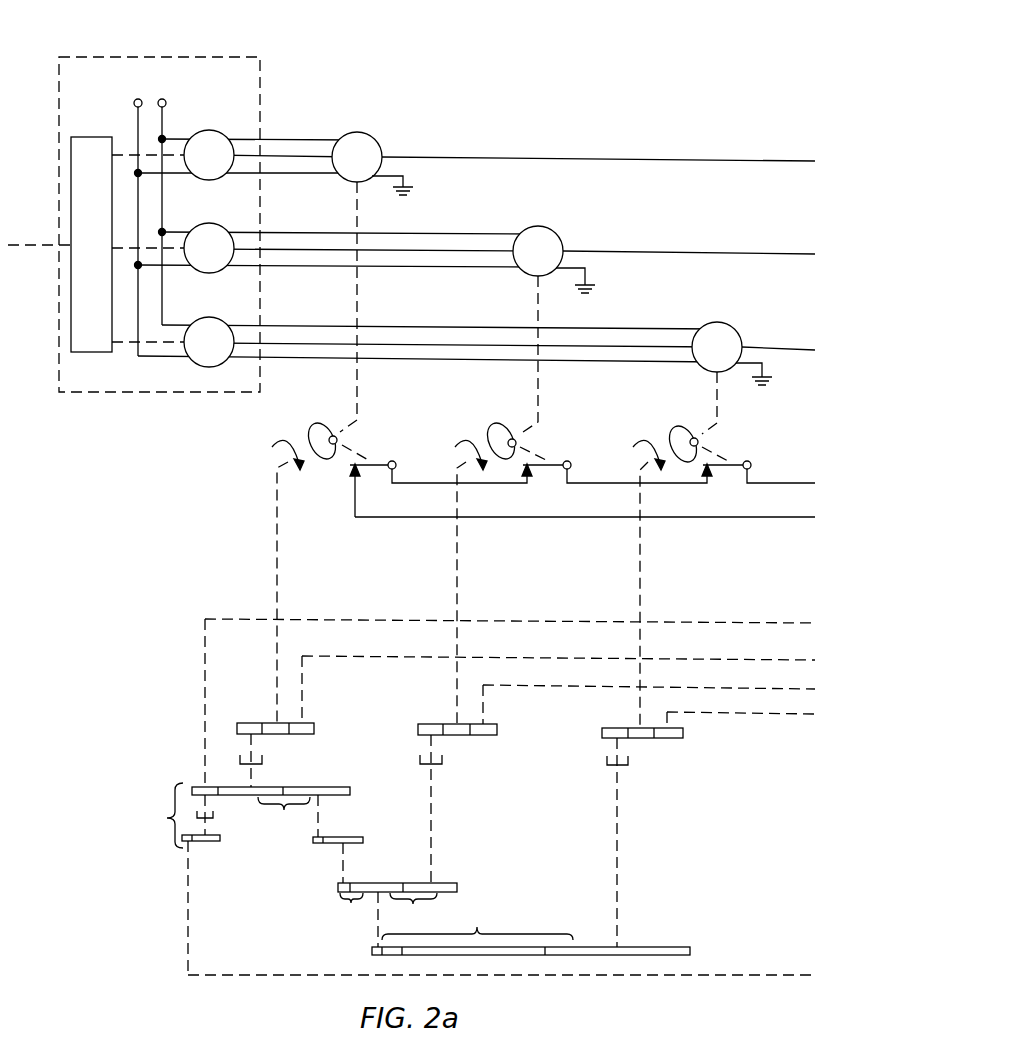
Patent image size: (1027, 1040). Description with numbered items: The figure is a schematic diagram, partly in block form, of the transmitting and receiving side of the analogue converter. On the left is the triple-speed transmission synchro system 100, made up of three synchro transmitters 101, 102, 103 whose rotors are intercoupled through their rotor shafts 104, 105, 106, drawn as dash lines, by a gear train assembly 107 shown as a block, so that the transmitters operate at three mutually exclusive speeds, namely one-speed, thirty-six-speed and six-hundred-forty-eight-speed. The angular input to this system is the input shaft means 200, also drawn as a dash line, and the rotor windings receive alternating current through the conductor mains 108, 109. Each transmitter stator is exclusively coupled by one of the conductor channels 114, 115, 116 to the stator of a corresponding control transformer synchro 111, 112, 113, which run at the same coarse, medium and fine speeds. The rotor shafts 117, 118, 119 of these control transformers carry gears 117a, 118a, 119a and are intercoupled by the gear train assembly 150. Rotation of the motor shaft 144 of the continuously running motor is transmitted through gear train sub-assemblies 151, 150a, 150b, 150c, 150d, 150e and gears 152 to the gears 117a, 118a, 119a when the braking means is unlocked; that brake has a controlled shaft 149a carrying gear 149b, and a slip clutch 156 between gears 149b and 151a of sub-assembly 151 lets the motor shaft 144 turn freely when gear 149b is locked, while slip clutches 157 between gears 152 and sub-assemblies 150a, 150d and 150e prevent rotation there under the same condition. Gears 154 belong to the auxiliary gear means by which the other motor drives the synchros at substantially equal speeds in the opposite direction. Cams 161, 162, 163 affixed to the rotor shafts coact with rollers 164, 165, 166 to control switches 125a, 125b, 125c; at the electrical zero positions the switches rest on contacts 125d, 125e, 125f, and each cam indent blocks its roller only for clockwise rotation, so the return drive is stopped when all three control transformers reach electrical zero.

The triple-speed transmission synchro system 100 is at (152, 57).
The synchro transmitter 101 is at (213, 321).
The synchro transmitter 102 is at (213, 230).
The synchro transmitter 103 is at (212, 131).
The rotor shaft 104 is at (127, 341).
The rotor shaft 105 is at (125, 243).
The rotor shaft 106 is at (120, 149).
The gear train assembly 107 is at (72, 137).
The conductor main 108 is at (136, 122).
The conductor main 109 is at (165, 115).
The control transformer synchro 111 is at (724, 328).
The control transformer synchro 112 is at (545, 233).
The control transformer synchro 113 is at (367, 135).
The channel of conductors 114 is at (291, 321).
The channel of conductors 115 is at (291, 228).
The channel of conductors 116 is at (291, 135).
The rotor shaft 117 is at (722, 407).
The rotor shaft 118 is at (538, 394).
The rotor shaft 119 is at (360, 385).
The switch 125a is at (727, 470).
The switch 125b is at (542, 470).
The switch 125c is at (370, 467).
The contact 125d is at (707, 473).
The contact 125e is at (532, 472).
The contact 125f is at (350, 470).
The motor shaft 144 is at (800, 975).
The controlled shaft 149a is at (755, 622).
The gear 149b is at (202, 783).
The gear train assembly 150 is at (540, 844).
The gear train sub-assembly 150a is at (271, 802).
The gear train sub-assembly 150b is at (322, 836).
The gear train sub-assembly 150c is at (395, 902).
The gear train sub-assembly 150d is at (414, 907).
The gear train sub-assembly 150e is at (531, 935).
The gear train sub-assembly 151 is at (172, 815).
The gear 151a is at (205, 843).
The gear 152 is at (248, 723).
The gear 154 is at (315, 723).
The slip clutch 156 is at (218, 815).
The slip clutch 157 is at (239, 757).
The cam 161 is at (680, 425).
The cam 162 is at (505, 422).
The cam 163 is at (327, 418).
The roller 164 is at (700, 441).
The roller 165 is at (519, 438).
The roller 166 is at (340, 436).
The gear 117a is at (645, 740).
The gear 118a is at (462, 737).
The gear 119a is at (282, 737).
The input shaft means 200 is at (17, 243).